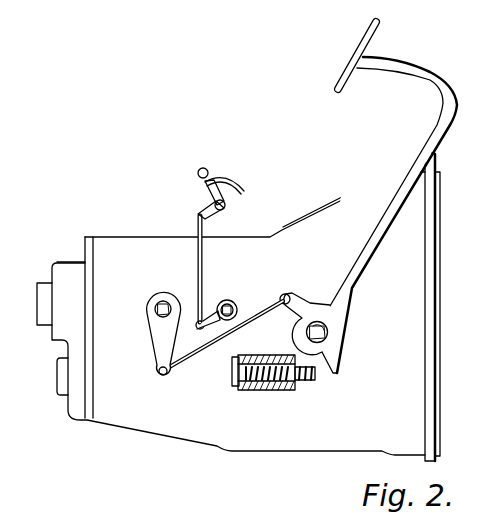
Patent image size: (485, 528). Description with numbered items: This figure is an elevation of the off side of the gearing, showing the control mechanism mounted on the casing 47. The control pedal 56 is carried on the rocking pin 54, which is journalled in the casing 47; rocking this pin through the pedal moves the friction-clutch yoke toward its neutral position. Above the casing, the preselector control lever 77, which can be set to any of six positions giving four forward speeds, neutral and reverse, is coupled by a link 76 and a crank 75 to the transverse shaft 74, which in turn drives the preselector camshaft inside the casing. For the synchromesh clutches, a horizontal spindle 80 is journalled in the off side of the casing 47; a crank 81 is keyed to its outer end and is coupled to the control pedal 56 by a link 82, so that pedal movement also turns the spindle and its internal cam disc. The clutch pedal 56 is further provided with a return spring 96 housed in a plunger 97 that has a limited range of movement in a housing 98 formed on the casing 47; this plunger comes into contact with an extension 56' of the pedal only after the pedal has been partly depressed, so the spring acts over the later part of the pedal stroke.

The casing 47 is at (255, 452).
The rocking pin 54 is at (327, 331).
The control pedal 56 is at (387, 197).
The extension of the pedal 56' is at (345, 362).
The transverse shaft 74 is at (236, 304).
The crank 75 is at (211, 308).
The link 76 is at (204, 232).
The preselector control lever 77 is at (208, 172).
The horizontal spindle 80 is at (155, 316).
The crank 81 is at (160, 354).
The link 82 is at (202, 352).
The return spring 96 is at (253, 383).
The plunger 97 is at (302, 381).
The housing 98 is at (272, 356).